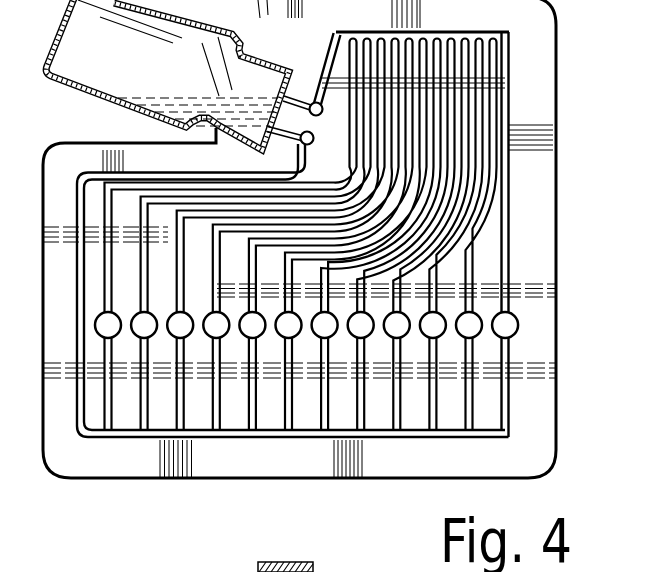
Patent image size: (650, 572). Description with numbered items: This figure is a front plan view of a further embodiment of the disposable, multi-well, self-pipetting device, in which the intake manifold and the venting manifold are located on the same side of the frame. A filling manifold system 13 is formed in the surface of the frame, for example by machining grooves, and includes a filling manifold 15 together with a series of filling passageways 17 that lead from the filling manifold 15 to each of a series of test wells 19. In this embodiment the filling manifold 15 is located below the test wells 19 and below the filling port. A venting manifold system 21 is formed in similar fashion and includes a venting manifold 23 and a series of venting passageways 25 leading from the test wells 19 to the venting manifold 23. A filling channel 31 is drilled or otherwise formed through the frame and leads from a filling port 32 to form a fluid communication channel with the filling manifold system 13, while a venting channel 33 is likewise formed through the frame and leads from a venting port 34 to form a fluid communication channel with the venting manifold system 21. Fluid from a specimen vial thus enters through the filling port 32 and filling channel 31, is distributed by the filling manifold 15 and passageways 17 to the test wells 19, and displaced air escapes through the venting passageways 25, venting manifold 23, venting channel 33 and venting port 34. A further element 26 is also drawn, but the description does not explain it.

The filling manifold system 13 is at (286, 447).
The filling manifold 15 is at (409, 437).
The filling passageways 17 is at (128, 421).
The test wells 19 is at (112, 321).
The venting manifold system 21 is at (511, 97).
The venting manifold 23 is at (482, 33).
The venting passageways 25 is at (145, 252).
The spacer 26 is at (253, 570).
The filling channel 31 is at (297, 141).
The filling port 32 is at (313, 139).
The venting channel 33 is at (322, 110).
The venting port 34 is at (296, 96).